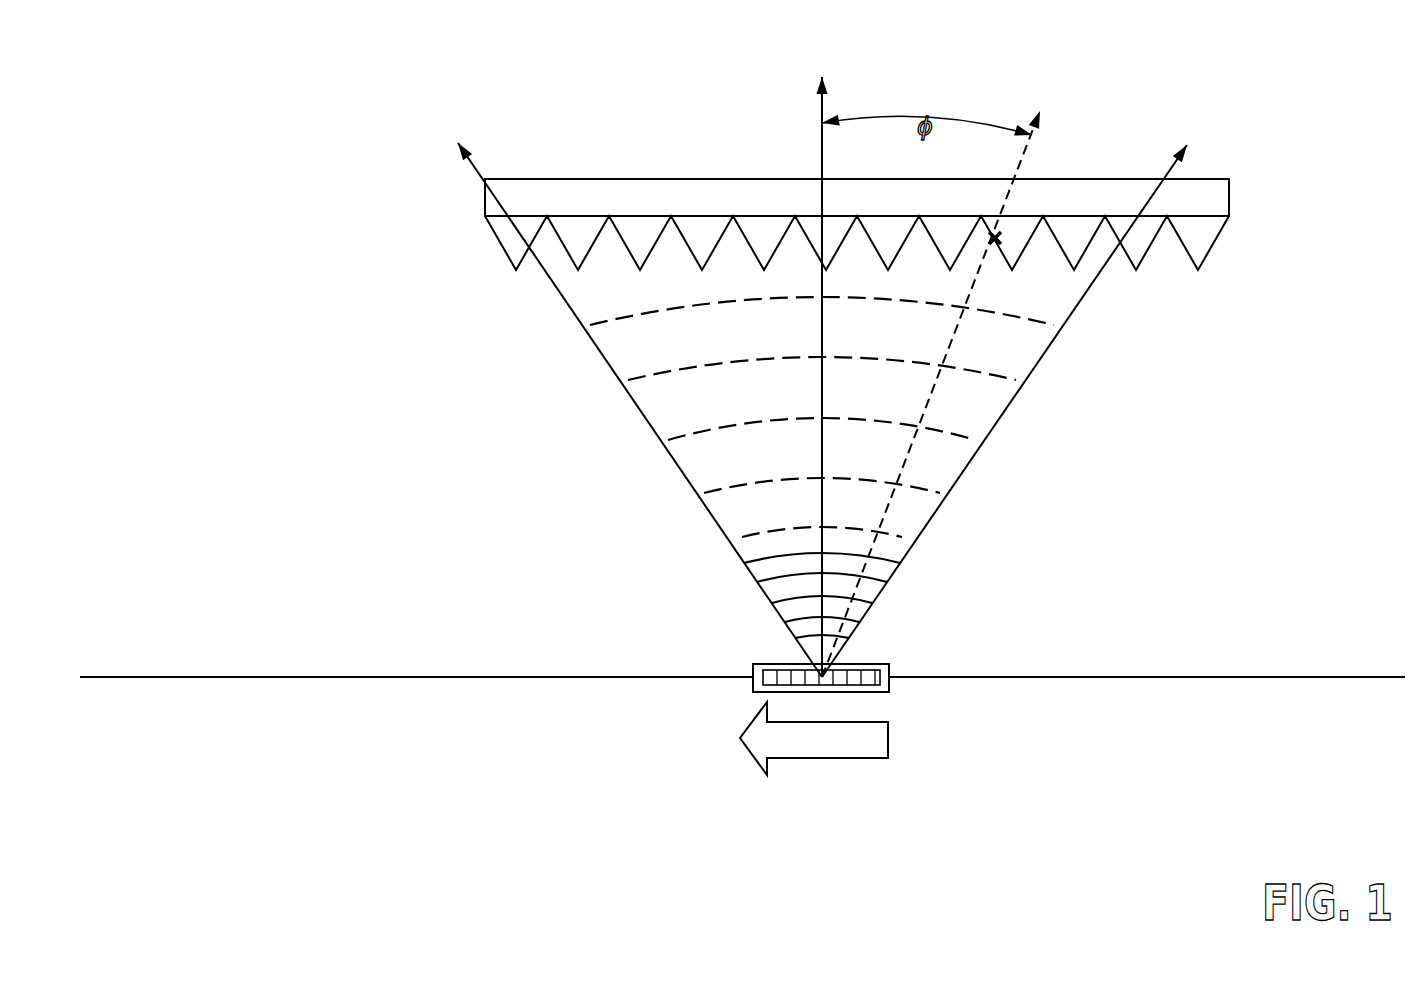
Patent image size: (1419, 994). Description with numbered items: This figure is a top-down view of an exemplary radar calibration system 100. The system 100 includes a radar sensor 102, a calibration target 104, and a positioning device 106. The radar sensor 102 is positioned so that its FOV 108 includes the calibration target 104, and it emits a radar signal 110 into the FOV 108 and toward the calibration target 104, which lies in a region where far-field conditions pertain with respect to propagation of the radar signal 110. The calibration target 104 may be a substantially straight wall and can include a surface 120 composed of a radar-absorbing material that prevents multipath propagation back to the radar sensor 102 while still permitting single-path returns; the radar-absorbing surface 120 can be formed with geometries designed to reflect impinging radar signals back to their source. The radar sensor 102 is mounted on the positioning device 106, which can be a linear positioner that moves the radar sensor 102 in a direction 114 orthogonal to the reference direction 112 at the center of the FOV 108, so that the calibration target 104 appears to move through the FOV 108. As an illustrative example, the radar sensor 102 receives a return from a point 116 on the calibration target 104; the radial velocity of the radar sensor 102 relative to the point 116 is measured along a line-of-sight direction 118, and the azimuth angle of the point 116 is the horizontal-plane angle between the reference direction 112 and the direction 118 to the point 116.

The radar calibration system 100 is at (147, 78).
The radar sensor 102 is at (848, 672).
The calibration target 104 is at (893, 240).
The positioning device 106 is at (933, 720).
The FOV 108 is at (1000, 423).
The radar signal 110 is at (760, 580).
The reference direction 112 is at (820, 490).
The direction 114 is at (814, 738).
The point 116 is at (994, 232).
The line-of-sight direction 118 is at (1040, 114).
The surface 120 is at (1145, 255).